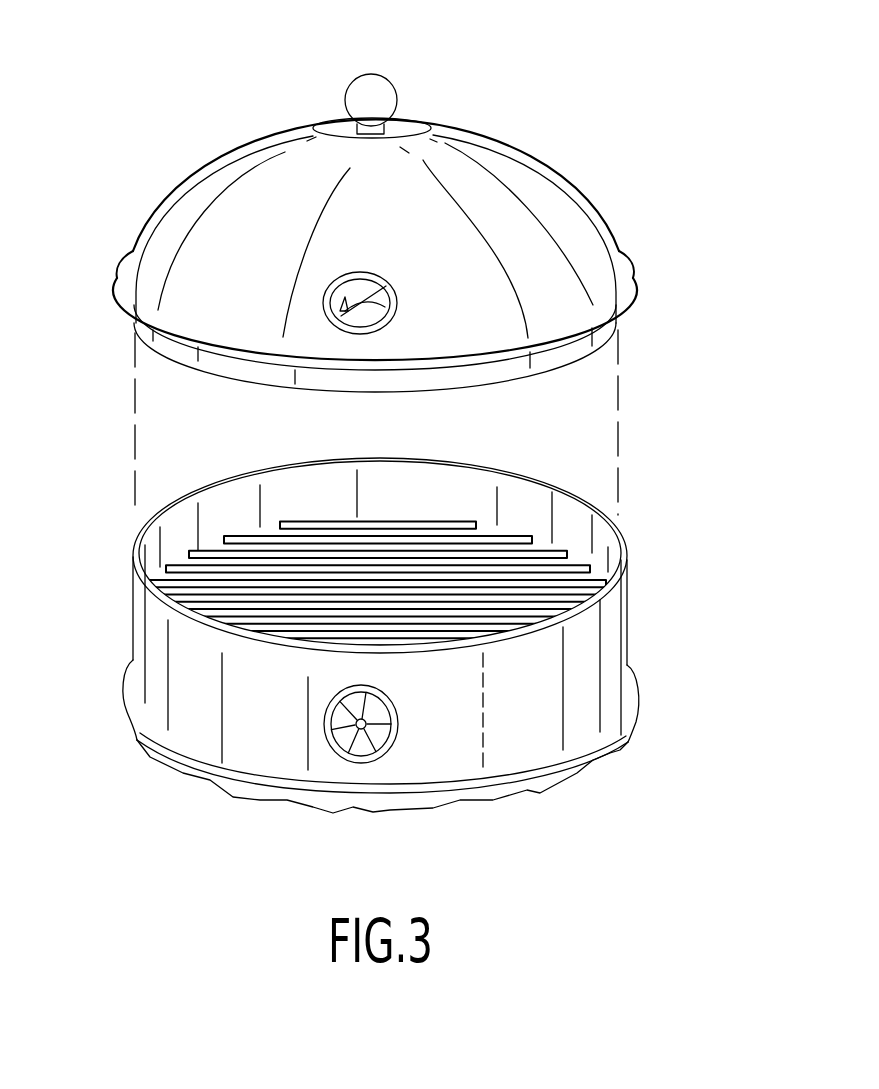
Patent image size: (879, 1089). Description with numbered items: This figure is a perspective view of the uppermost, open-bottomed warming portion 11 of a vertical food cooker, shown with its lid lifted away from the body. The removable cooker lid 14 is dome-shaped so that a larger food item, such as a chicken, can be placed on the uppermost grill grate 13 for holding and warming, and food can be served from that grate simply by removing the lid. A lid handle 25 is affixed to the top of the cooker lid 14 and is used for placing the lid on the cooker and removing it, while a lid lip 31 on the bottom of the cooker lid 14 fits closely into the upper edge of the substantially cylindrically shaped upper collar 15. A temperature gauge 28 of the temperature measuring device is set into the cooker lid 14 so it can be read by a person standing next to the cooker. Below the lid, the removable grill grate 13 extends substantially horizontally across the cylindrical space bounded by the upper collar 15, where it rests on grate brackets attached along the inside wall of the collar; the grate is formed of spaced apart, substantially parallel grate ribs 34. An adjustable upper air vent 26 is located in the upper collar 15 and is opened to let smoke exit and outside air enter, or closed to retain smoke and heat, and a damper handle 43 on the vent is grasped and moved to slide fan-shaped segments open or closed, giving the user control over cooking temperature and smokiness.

The warming portion 11 is at (656, 102).
The grill grate 13 is at (472, 552).
The cooker lid 14 is at (578, 214).
The upper collar 15 is at (608, 643).
The lid handle 25 is at (378, 85).
The upper air vent 26 is at (400, 728).
The temperature gauge 28 is at (400, 295).
The lid lip 31 is at (634, 283).
The grate ribs 34 is at (565, 550).
The damper handle 43 is at (320, 722).